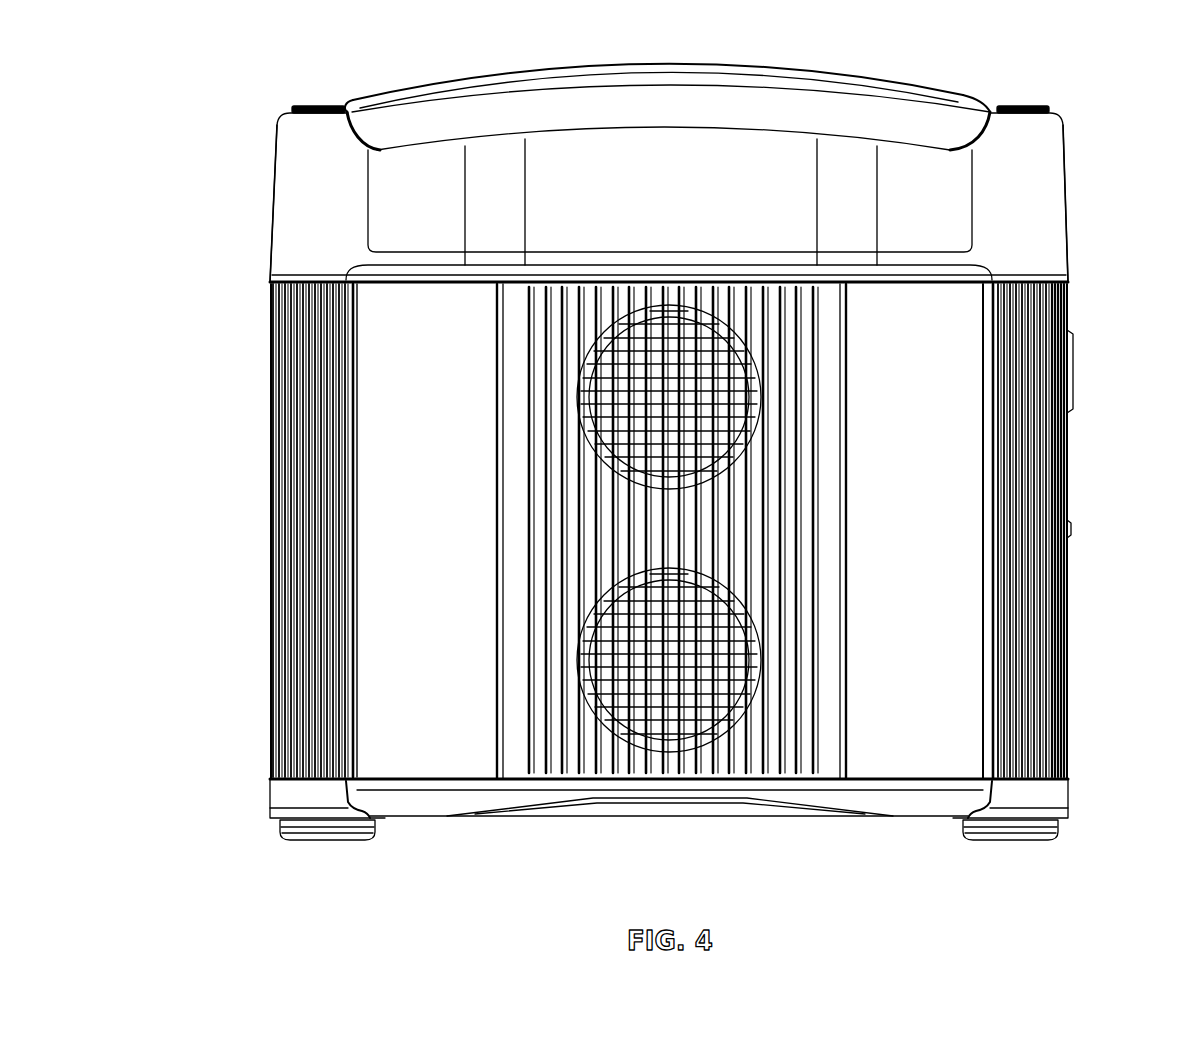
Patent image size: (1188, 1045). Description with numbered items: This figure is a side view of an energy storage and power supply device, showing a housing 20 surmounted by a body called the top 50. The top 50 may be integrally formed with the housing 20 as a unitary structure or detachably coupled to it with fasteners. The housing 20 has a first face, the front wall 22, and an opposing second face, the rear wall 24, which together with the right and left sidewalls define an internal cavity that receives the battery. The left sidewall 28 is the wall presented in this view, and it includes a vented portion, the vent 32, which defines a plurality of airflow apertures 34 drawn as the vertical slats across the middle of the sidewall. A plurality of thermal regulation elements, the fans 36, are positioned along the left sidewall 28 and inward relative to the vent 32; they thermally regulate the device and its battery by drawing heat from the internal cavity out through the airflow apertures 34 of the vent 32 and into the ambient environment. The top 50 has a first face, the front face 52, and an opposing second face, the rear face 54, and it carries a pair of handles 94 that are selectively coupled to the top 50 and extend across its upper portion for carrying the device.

The housing 20 is at (1048, 700).
The front wall 22 is at (1082, 575).
The rear wall 24 is at (258, 470).
The left sidewall 28 is at (412, 745).
The vent 32 is at (852, 490).
The airflow apertures 34 is at (620, 756).
The fans 36 is at (716, 368).
The top 50 is at (1080, 167).
The front face 52 is at (1070, 237).
The rear face 54 is at (272, 165).
The handles 94 is at (728, 89).